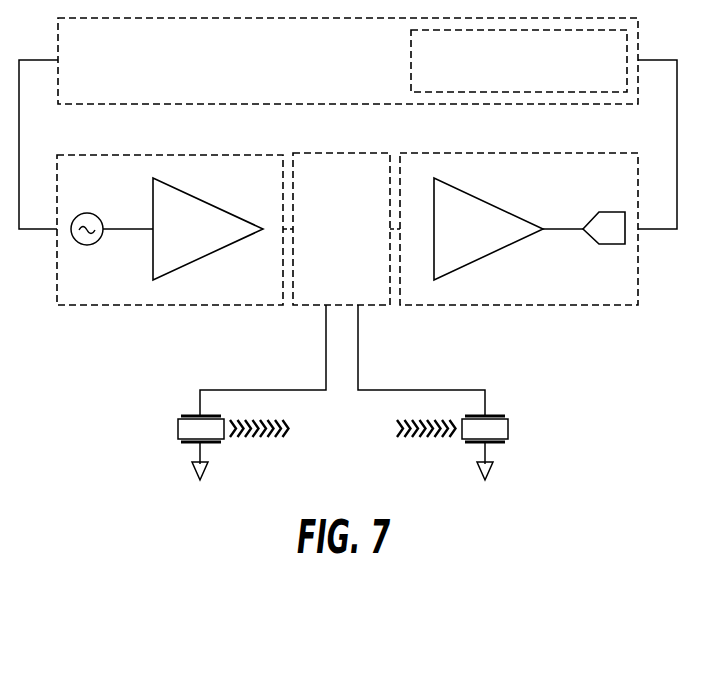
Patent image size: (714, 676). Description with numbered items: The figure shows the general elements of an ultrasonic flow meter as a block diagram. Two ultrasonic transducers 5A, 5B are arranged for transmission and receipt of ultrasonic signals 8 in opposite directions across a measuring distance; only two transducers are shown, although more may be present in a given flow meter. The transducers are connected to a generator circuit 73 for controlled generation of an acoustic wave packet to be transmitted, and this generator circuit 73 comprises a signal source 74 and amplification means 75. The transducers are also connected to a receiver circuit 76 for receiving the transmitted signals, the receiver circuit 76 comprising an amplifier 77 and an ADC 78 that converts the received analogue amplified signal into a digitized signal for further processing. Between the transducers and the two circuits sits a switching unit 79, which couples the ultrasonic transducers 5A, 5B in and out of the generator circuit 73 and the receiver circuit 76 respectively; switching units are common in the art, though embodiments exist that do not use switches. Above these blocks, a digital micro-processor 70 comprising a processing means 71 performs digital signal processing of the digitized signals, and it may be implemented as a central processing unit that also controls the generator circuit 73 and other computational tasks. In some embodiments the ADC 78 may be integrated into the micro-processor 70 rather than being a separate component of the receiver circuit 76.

The digital micro-processor 70 is at (130, 76).
The processing means 71 is at (470, 73).
The generator circuit 73 is at (113, 305).
The signal source 74 is at (87, 213).
The amplification means 75 is at (207, 209).
The receiver circuit 76 is at (583, 305).
The amplifier 77 is at (490, 257).
The ADC 78 is at (602, 213).
The switching unit 79 is at (360, 200).
The ultrasonic transducer 5A is at (176, 431).
The ultrasonic transducer 5B is at (510, 425).
The ultrasonic signals 8 is at (272, 439).